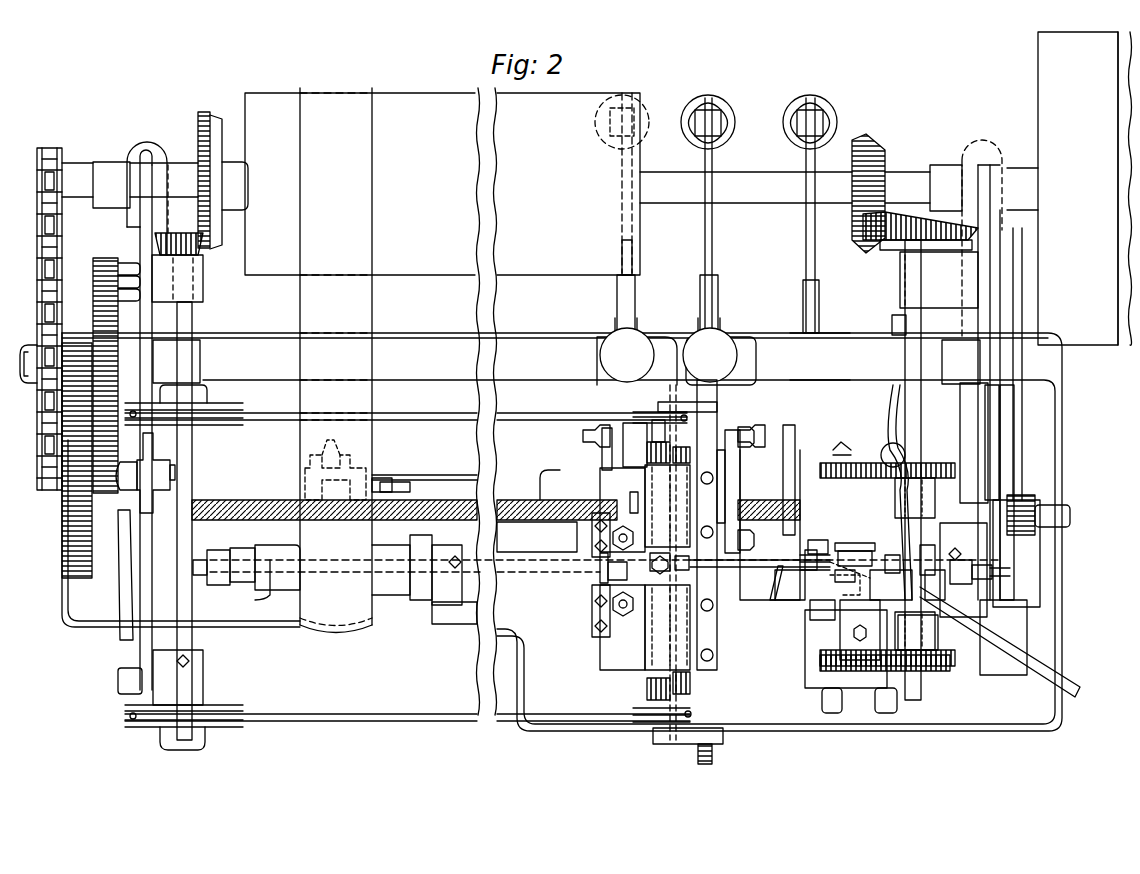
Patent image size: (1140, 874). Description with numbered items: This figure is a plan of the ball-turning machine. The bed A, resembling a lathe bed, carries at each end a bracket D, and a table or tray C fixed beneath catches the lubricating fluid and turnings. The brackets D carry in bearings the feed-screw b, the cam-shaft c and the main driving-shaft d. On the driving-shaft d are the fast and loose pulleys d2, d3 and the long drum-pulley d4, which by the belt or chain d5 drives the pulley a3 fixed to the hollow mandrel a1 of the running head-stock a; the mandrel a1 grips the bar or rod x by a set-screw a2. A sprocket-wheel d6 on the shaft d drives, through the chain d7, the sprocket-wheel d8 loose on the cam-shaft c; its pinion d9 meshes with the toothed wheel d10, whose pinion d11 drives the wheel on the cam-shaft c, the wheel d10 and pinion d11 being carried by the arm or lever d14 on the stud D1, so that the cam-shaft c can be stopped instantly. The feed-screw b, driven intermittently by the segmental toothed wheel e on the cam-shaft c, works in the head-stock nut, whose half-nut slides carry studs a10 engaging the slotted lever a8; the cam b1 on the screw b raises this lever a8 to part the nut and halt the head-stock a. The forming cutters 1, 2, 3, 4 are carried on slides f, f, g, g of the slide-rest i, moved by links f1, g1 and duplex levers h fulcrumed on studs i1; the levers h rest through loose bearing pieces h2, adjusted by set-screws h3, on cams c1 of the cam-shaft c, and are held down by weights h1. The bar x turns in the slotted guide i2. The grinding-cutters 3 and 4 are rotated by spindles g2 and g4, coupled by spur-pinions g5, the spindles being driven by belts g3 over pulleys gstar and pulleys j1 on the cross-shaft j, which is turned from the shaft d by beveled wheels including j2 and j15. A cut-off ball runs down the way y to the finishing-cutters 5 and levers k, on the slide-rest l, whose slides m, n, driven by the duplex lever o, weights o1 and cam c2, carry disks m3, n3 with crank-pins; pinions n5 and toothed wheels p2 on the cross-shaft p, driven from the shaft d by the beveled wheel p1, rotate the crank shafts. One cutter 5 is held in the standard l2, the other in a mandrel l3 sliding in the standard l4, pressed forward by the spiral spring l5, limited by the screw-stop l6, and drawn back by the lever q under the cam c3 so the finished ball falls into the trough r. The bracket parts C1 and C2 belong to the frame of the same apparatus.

The table or tray C is at (566, 532).
The cam-shaft c is at (555, 352).
The chain d7 is at (36, 282).
The sprocket-wheel d8 is at (28, 384).
The sprocket-wheel d6 is at (77, 169).
The main driving-shaft d is at (555, 186).
The brackets D is at (553, 416).
The cross-shaft j is at (197, 302).
The beveled wheel j2 is at (177, 261).
The bevel gear j15 is at (223, 180).
The toothed pinion d9 is at (93, 355).
The toothed wheel d10 is at (77, 460).
The toothed pinion d11 is at (501, 323).
The arm or lever d14 is at (130, 602).
The stud D1 is at (145, 473).
The pulleys j1 is at (184, 567).
The belt or chain d5 is at (336, 360).
The long drum-pulley d4 is at (442, 184).
The weights h1 is at (673, 114).
The duplex levers h is at (667, 211).
The cams c1 is at (637, 326).
The weights o1 is at (819, 119).
The duplex lever o is at (803, 252).
The fast pulley d2 is at (1078, 188).
The loose pulley d3 is at (1130, 188).
The cross-shaft p is at (953, 420).
The segmental toothed wheel e is at (1035, 508).
The cam b1 is at (1046, 515).
The beveled toothed wheel p1 is at (920, 255).
The cam c3 is at (892, 320).
The cam c2 is at (817, 368).
The feed-screw b is at (496, 500).
The belts g3 is at (407, 567).
The lever a8 is at (424, 471).
The studs or pins a10 is at (382, 468).
The bar or rod x is at (596, 566).
The running head-stock a is at (343, 567).
The pulley a3 is at (297, 584).
The hollow mandrel a1 is at (448, 567).
The set-screw a2 is at (466, 561).
The bed A is at (504, 573).
The set-screws h3 is at (676, 356).
The spindles g4 is at (670, 562).
The pulleys gstar is at (637, 738).
The studs i1 is at (668, 429).
The loose bearing or friction pieces h2 is at (602, 450).
The bracket C2 is at (555, 485).
The links f1 is at (612, 468).
The slides f is at (618, 569).
The spindles g2 is at (667, 567).
The slides g is at (677, 564).
The spur-pinions g5 is at (662, 678).
The slide-rest i is at (712, 650).
The links g1 is at (735, 518).
The bearing or guide i2 is at (642, 556).
The forming or roughing cutters 1 is at (600, 558).
The forming or roughing cutters 2 is at (632, 566).
The hollow grinding-cutters 3 is at (660, 568).
The hollow grinding-cutters 4 is at (691, 569).
The finishing-cutters 5 is at (870, 567).
The bracket C1 is at (770, 525).
The slide n is at (783, 440).
The disk n3 is at (828, 606).
The toothed pinion n5 is at (879, 659).
The disk m3 is at (855, 544).
The slide m is at (800, 560).
The way y is at (760, 557).
The lever k is at (861, 563).
The standard l2 is at (785, 584).
The mandrel l3 is at (892, 593).
The standard l4 is at (891, 605).
The slide-rest l is at (919, 585).
The spiral spring l5 is at (963, 570).
The screw-stop l6 is at (988, 570).
The lever q is at (893, 492).
The toothed wheels p2 is at (897, 567).
The trough r is at (1000, 642).